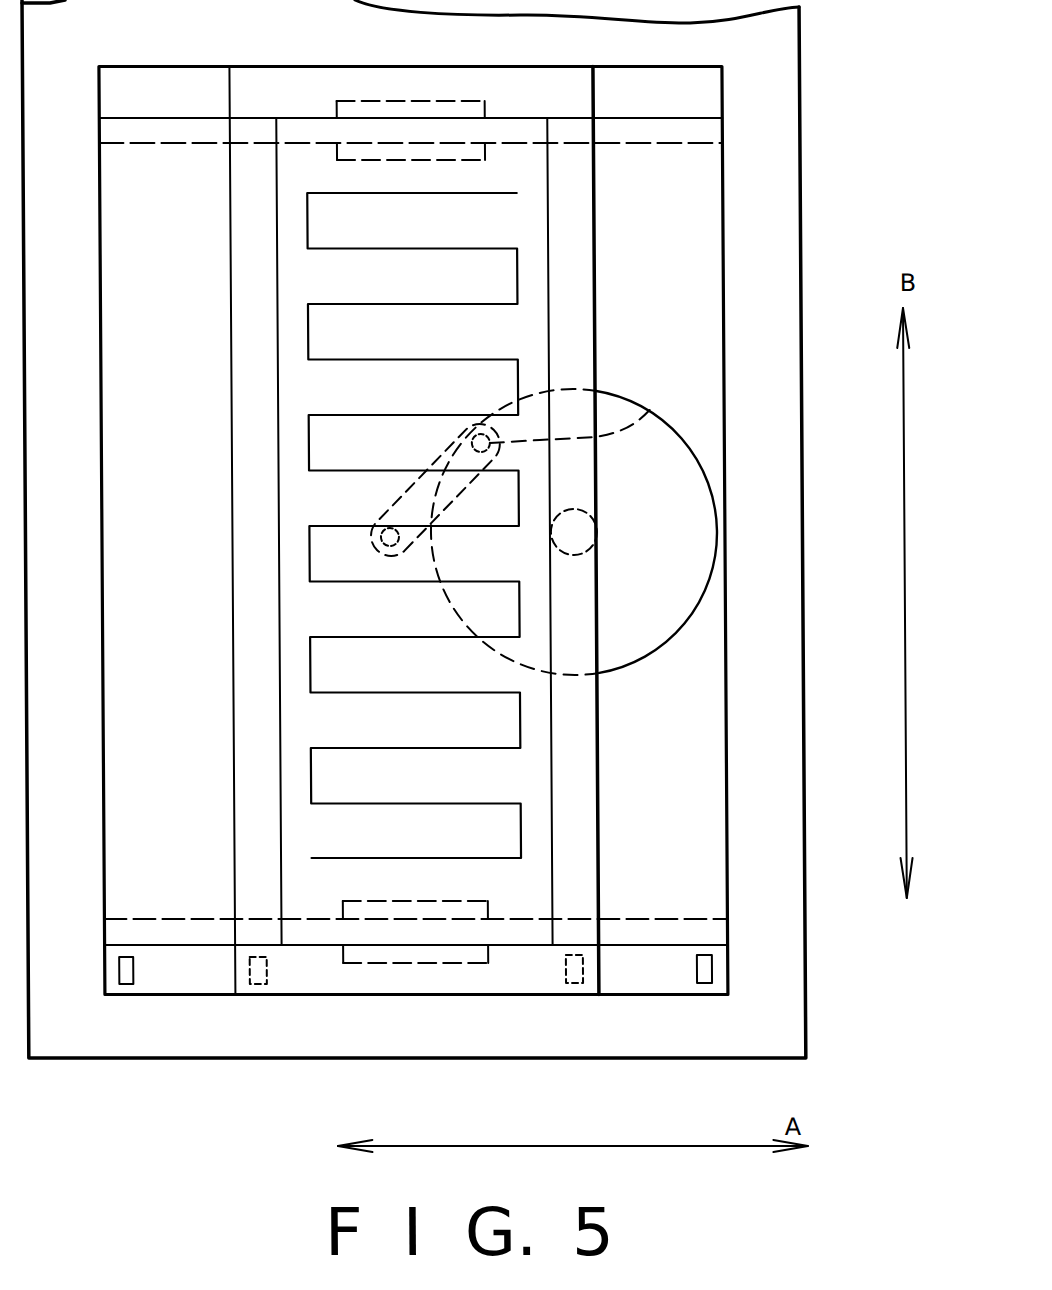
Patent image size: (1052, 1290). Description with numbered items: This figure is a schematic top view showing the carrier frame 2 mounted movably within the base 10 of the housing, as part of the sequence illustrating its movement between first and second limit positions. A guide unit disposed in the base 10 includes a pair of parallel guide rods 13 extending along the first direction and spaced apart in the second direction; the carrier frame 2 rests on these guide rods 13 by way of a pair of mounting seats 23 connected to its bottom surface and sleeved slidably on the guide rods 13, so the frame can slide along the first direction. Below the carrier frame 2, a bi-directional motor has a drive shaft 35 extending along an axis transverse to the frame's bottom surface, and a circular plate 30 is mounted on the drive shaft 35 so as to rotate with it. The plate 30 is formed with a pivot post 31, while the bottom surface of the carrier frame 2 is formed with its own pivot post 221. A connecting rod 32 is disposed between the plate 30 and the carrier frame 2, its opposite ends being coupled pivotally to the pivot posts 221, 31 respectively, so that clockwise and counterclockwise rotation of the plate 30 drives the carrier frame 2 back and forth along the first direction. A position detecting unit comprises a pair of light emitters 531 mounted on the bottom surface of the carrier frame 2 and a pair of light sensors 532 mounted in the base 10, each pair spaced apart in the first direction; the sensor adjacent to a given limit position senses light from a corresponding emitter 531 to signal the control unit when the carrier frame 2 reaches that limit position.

The base 10 is at (800, 213).
The guide rods 13 is at (662, 143).
The carrier frame 2 is at (528, 273).
The mounting seats 23 is at (336, 155).
The pivot post 221 is at (378, 538).
The circular plate 30 is at (655, 499).
The pivot post 31 is at (648, 409).
The connecting rod 32 is at (407, 492).
The drive shaft 35 is at (576, 527).
The light emitters 531 is at (254, 987).
The light sensors 532 is at (120, 977).